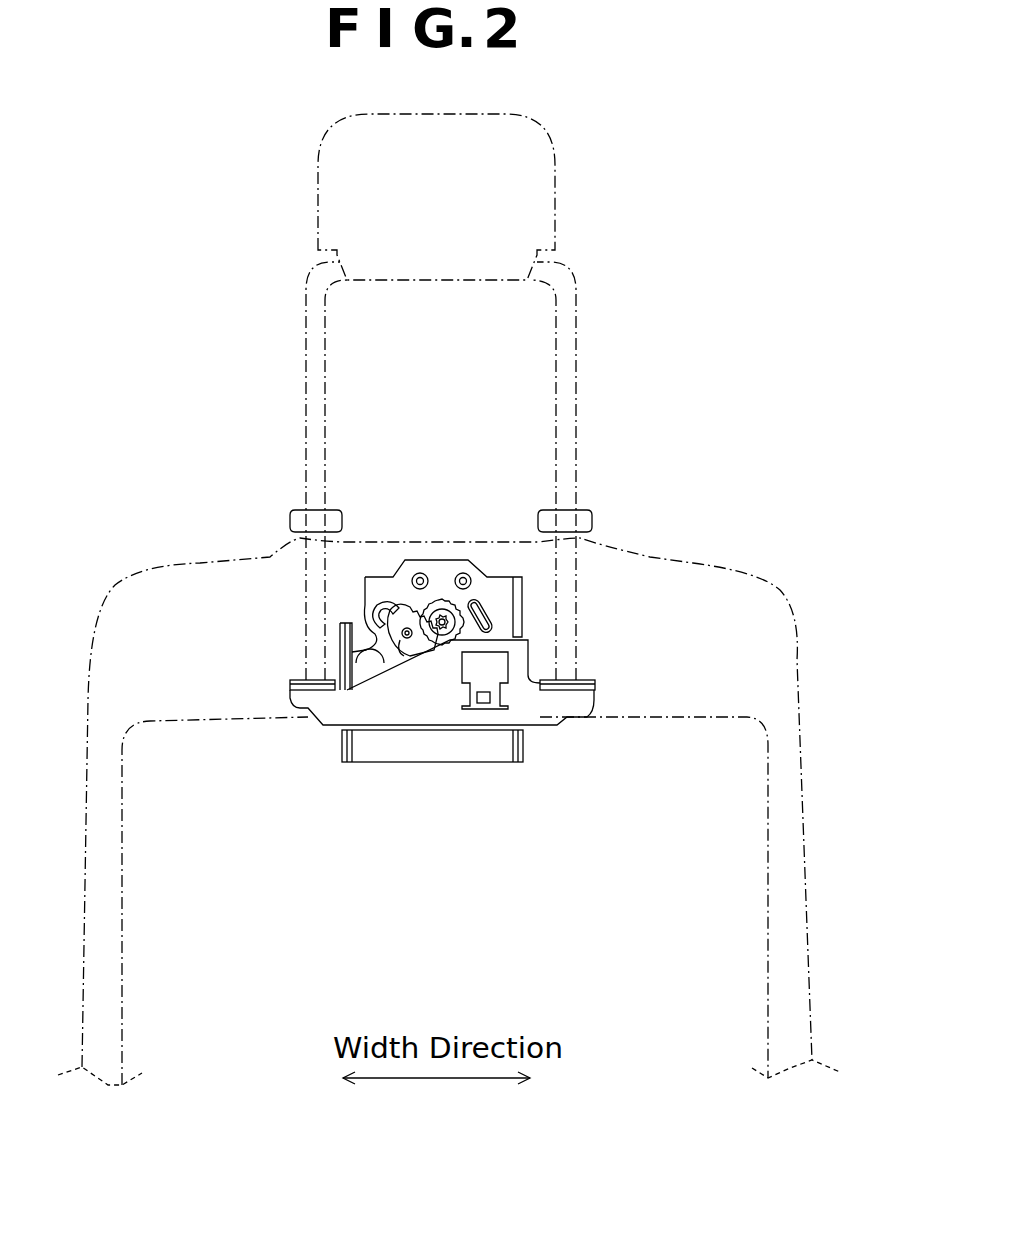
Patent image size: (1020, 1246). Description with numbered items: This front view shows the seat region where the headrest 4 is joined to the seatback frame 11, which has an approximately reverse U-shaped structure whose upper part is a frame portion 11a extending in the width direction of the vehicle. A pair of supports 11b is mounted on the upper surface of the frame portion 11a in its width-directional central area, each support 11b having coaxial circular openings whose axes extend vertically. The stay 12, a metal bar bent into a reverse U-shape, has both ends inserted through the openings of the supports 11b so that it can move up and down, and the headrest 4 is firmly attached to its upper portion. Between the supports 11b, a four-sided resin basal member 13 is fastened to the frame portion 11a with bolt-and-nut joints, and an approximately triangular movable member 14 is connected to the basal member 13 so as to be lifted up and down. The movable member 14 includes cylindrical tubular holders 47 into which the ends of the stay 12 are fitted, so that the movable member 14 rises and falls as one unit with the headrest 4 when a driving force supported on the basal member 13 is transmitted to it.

The headrest 4 is at (554, 196).
The stay 12 is at (575, 368).
The seatback frame 11 is at (797, 655).
The frame portion 11a is at (692, 560).
The supports 11b is at (337, 510).
The basal member 13 is at (342, 748).
The movable member 14 is at (533, 723).
The holders 47 is at (303, 718).